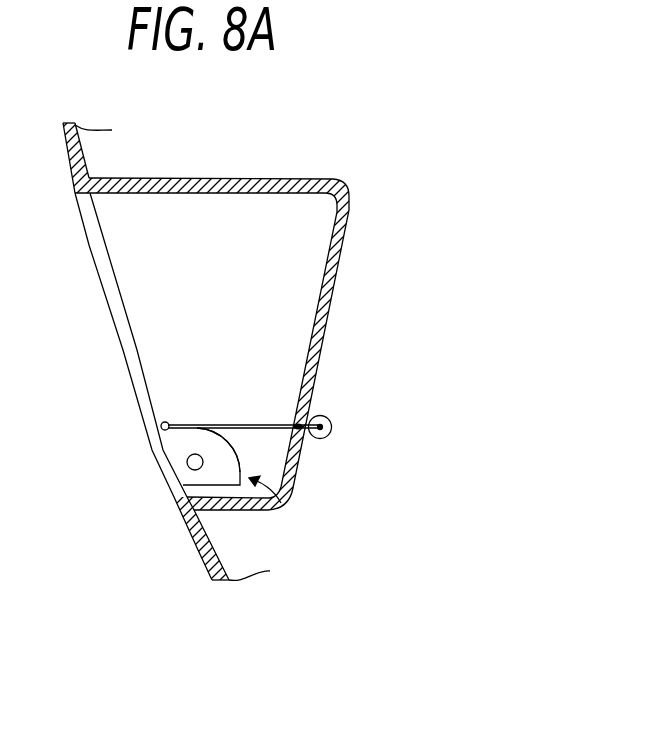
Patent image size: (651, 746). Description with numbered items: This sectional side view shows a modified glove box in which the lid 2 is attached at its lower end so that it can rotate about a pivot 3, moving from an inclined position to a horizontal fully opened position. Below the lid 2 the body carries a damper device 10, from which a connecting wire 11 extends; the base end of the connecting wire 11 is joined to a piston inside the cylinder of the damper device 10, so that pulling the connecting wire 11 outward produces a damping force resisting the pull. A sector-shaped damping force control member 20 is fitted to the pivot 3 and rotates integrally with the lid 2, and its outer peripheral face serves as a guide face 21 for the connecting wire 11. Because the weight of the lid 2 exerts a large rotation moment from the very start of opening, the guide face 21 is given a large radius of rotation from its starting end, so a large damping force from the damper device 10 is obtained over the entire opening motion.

The lid 2 is at (123, 361).
The pivot 3 is at (187, 462).
The damper device 10 is at (328, 438).
The connecting wire 11 is at (267, 424).
The damping force control member 20 is at (283, 505).
The guide face 21 is at (227, 434).